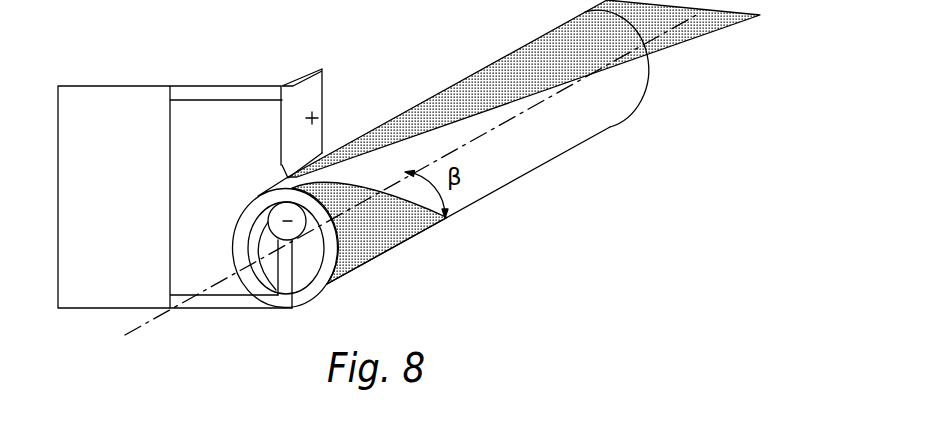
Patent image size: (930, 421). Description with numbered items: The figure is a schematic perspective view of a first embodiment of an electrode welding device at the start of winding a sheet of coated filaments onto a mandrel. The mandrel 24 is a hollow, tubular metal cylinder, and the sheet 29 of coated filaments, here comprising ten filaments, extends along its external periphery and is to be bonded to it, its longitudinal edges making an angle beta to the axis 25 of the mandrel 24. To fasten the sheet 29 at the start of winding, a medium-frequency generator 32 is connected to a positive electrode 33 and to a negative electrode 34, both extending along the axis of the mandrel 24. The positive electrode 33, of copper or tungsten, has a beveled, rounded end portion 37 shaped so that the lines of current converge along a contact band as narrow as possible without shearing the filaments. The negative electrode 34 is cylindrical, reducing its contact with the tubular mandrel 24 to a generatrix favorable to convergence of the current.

The mandrel 24 is at (575, 132).
The axis of the mandrel 25 is at (216, 284).
The sheet of coated filaments 29 is at (723, 22).
The medium-frequency generator 32 is at (78, 185).
The positive electrode 33 is at (316, 88).
The negative electrode 34 is at (270, 218).
The beveled end portion 37 is at (287, 176).